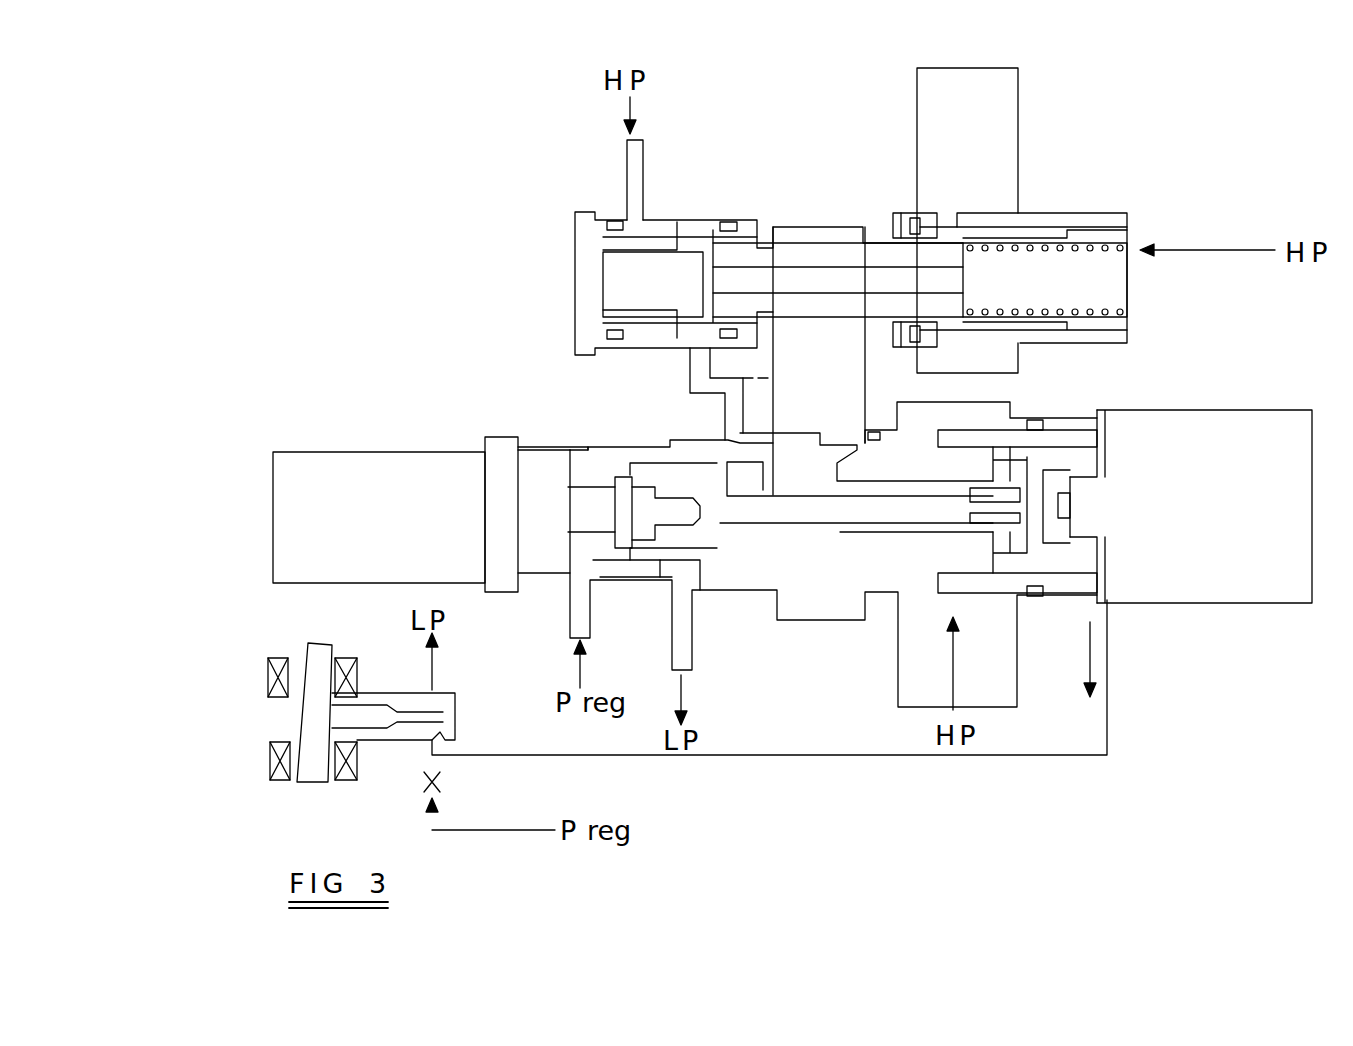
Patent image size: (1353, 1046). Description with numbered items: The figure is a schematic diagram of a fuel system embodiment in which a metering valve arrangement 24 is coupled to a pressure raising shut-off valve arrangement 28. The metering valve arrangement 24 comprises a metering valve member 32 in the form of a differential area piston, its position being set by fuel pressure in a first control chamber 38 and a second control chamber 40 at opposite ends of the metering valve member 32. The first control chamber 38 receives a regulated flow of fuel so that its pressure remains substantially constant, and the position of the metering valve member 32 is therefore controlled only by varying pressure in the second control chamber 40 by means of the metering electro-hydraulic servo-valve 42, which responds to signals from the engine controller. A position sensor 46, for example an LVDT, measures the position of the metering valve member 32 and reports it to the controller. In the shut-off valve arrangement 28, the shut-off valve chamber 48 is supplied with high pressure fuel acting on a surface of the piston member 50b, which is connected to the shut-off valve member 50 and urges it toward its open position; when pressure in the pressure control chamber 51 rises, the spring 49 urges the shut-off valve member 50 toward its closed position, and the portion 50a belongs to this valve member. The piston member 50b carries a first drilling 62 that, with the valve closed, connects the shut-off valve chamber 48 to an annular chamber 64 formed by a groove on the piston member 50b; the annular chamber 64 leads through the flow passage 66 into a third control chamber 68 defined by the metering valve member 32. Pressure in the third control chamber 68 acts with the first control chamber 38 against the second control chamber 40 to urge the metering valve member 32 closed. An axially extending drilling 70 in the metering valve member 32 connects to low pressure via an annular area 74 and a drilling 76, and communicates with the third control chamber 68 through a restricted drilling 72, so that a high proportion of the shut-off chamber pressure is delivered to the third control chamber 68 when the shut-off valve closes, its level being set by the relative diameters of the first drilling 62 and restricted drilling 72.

The metering valve arrangement 24 is at (300, 603).
The pressure raising shut-off valve arrangement 28 is at (1162, 283).
The metering valve member 32 is at (808, 540).
The first control chamber 38 is at (572, 507).
The second control chamber 40 is at (1100, 455).
The metering electro-hydraulic servo-valve 42 is at (228, 738).
The position sensor 46 is at (298, 513).
The shut-off valve chamber 48 is at (612, 270).
The spring 49 is at (1122, 310).
The shut-off valve member 50 is at (1045, 232).
The housing portion 50a is at (1075, 233).
The piston member 50b is at (660, 243).
The pressure control chamber 51 is at (1110, 265).
The first drilling 62 is at (675, 322).
The annular chamber 64 is at (682, 350).
The flow passage 66 is at (700, 398).
The third control chamber 68 is at (740, 455).
The axially extending drilling 70 is at (835, 505).
The restricted drilling 72 is at (1013, 407).
The annular area 74 is at (675, 570).
The drilling 76 is at (705, 588).